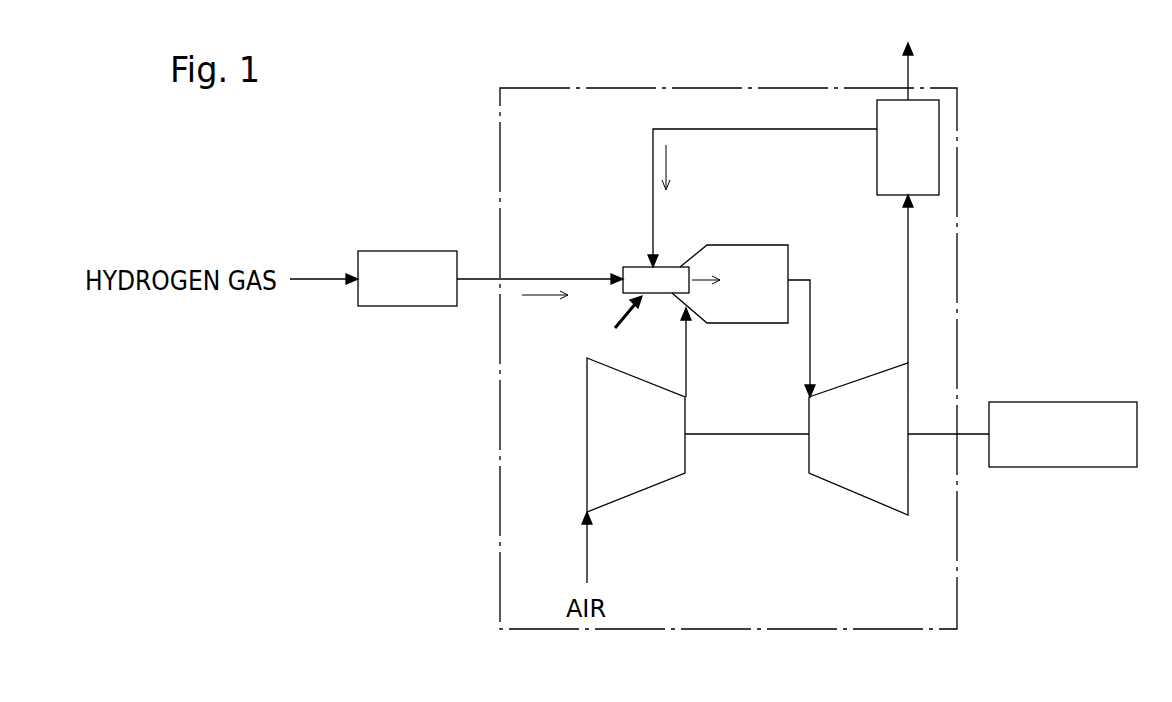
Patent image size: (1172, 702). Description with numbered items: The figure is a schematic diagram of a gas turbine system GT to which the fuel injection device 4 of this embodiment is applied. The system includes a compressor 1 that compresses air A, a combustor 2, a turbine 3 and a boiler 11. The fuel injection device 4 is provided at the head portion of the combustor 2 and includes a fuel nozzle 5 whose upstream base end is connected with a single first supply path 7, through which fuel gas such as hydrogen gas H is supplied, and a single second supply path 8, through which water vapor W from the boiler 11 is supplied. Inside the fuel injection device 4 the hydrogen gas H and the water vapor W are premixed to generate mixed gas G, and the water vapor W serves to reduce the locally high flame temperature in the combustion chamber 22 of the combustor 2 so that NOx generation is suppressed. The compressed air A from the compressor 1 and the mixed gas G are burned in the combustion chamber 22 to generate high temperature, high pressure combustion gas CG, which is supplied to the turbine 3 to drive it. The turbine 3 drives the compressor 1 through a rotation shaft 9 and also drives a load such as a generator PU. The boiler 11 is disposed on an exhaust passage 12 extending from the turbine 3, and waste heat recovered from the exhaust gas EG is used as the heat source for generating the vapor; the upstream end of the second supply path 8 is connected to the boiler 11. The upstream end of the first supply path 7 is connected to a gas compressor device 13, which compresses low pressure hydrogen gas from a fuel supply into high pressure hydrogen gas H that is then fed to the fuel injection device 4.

The compressor 1 is at (632, 495).
The combustor 2 is at (770, 245).
The turbine 3 is at (846, 490).
The fuel injection device 4 is at (598, 326).
The fuel nozzle 5 is at (672, 280).
The first supply path 7 is at (538, 279).
The second supply path 8 is at (773, 129).
The rotation shaft 9 is at (745, 435).
The boiler 11 is at (939, 130).
The exhaust passage 12 is at (908, 243).
The gas compressor device 13 is at (410, 251).
The combustion chamber 22 is at (765, 297).
The gas turbine system GT is at (948, 82).
The generator PU is at (1085, 402).
The hydrogen gas H is at (540, 297).
The water vapor W is at (668, 157).
The air A is at (686, 350).
The mixed gas G is at (697, 285).
The combustion gas CG is at (812, 313).
The exhaust gas EG is at (905, 78).